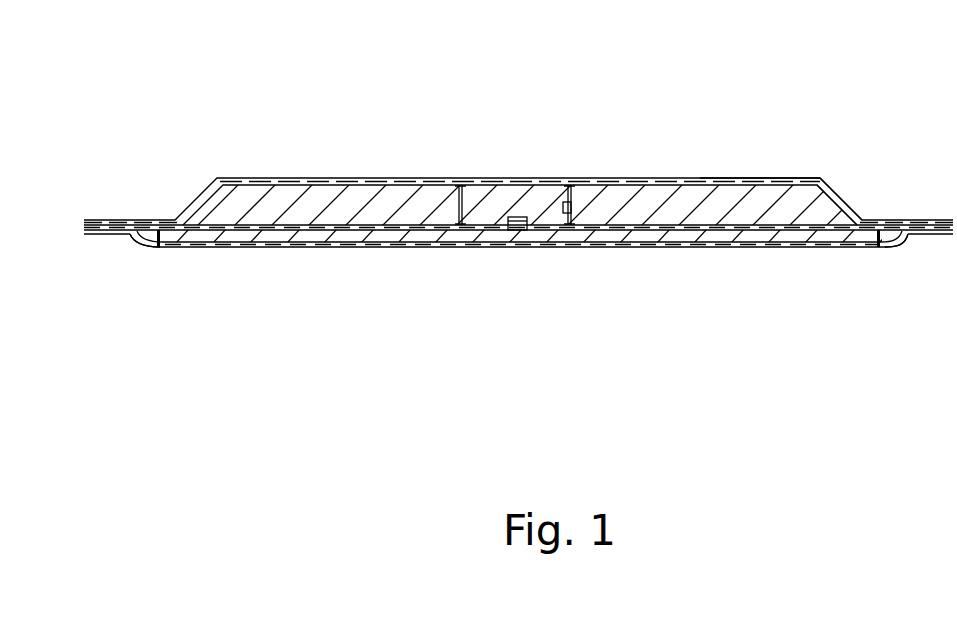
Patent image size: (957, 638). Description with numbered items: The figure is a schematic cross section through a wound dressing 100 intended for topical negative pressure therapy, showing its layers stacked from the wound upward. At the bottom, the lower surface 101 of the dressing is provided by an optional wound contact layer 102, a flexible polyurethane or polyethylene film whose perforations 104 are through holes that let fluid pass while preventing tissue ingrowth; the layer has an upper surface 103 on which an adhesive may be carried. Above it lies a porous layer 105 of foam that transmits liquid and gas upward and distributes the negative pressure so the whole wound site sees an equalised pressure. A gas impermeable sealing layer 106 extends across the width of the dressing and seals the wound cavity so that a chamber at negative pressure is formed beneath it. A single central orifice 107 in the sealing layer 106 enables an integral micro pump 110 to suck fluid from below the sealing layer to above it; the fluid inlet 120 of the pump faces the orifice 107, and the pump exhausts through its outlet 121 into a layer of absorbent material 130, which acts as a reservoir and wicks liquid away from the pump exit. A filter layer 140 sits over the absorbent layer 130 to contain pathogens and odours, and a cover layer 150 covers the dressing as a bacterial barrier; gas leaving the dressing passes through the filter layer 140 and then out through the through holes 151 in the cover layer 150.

The wound dressing 100 is at (187, 140).
The lower surface 101 is at (242, 254).
The wound contact layer 102 is at (875, 247).
The upper surface 103 is at (747, 235).
The perforations 104 is at (290, 240).
The porous layer 105 is at (193, 240).
The sealing layer 106 is at (833, 210).
The orifice 107 is at (513, 232).
The micro pump 110 is at (477, 208).
The fluid inlet 120 is at (530, 216).
The outlet 121 is at (567, 203).
The absorbent layer 130 is at (237, 197).
The filter layer 140 is at (767, 178).
The cover layer 150 is at (305, 178).
The through holes 151 is at (365, 178).